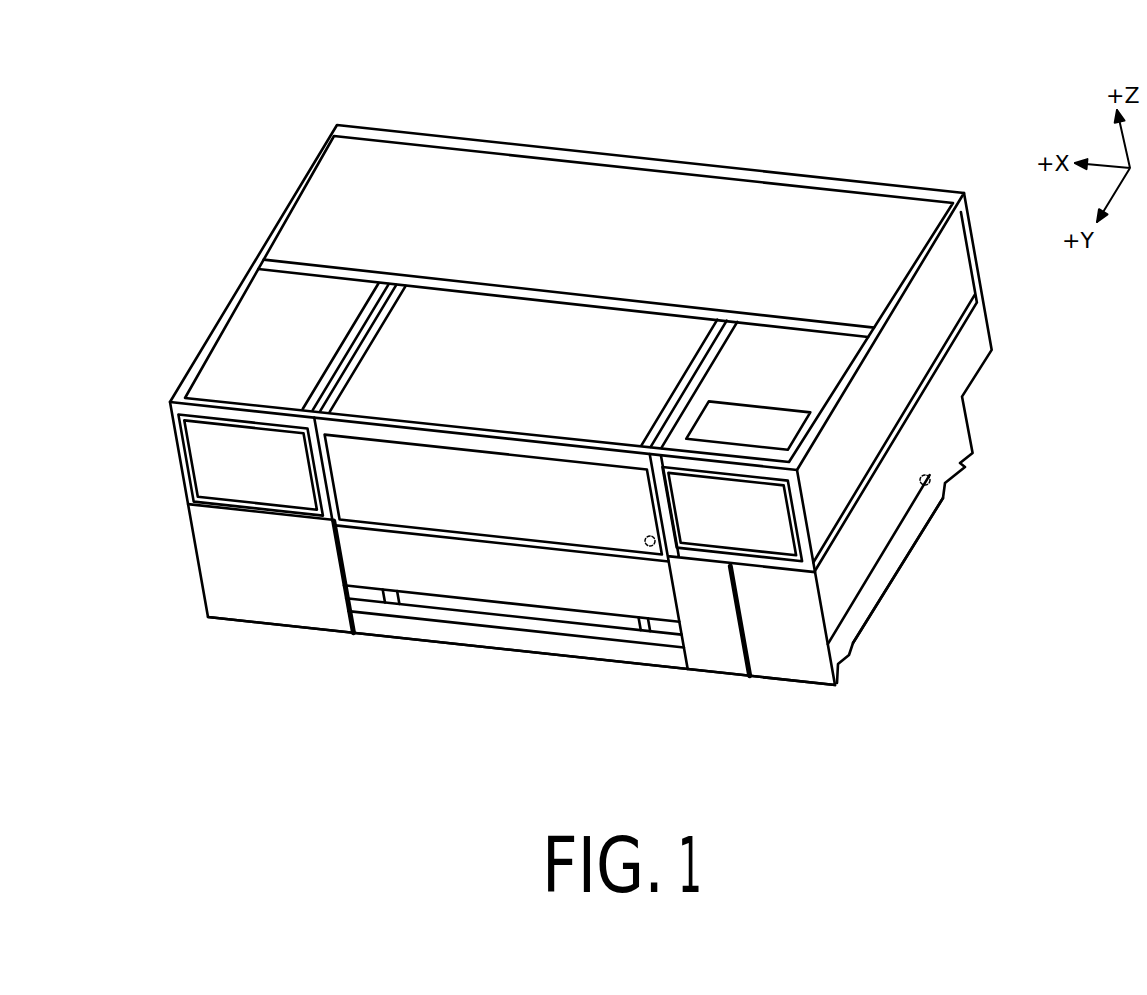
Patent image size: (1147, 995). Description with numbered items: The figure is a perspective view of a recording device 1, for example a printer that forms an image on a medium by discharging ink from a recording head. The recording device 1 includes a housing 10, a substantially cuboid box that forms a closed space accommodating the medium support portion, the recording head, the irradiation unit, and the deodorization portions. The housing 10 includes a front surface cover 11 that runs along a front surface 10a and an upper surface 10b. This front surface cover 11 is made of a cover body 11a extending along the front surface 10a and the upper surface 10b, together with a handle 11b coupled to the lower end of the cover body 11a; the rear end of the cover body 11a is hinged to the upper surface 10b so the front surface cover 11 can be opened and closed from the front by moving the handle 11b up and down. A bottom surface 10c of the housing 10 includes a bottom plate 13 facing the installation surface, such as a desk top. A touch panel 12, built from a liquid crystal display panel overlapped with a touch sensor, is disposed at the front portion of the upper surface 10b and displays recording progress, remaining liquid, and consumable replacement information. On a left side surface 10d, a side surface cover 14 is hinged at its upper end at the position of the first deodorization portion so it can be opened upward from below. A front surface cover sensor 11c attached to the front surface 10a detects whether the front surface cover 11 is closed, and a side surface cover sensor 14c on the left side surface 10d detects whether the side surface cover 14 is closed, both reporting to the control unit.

The recording device 1 is at (617, 135).
The housing 10 is at (455, 127).
The front surface 10a is at (325, 582).
The upper surface 10b is at (693, 200).
The bottom surface 10c is at (672, 668).
The left side surface 10d is at (888, 570).
The front surface cover 11 is at (373, 402).
The cover body 11a is at (497, 433).
The handle 11b is at (508, 597).
The front surface cover sensor 11c is at (647, 545).
The touch panel 12 is at (767, 425).
The bottom plate 13 is at (795, 682).
The side surface cover 14 is at (900, 520).
The side surface cover sensor 14c is at (955, 487).